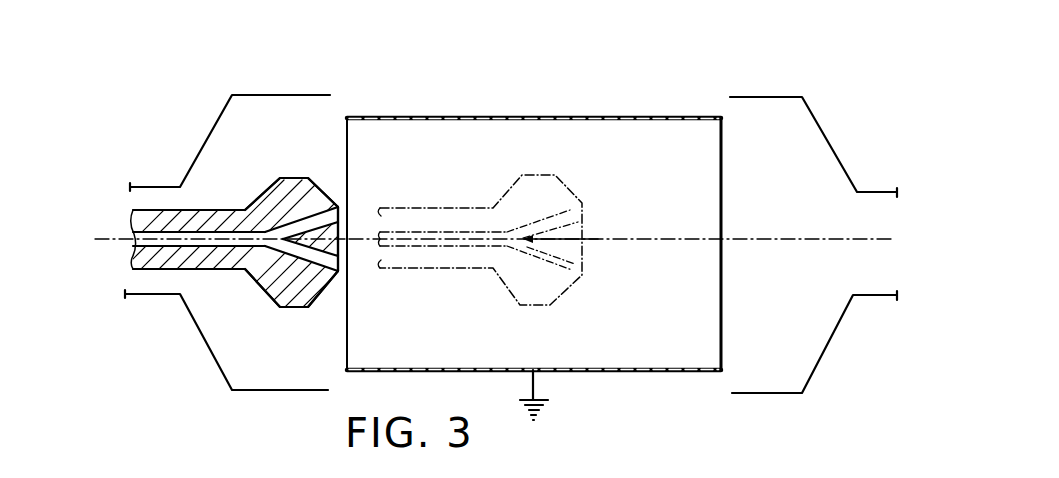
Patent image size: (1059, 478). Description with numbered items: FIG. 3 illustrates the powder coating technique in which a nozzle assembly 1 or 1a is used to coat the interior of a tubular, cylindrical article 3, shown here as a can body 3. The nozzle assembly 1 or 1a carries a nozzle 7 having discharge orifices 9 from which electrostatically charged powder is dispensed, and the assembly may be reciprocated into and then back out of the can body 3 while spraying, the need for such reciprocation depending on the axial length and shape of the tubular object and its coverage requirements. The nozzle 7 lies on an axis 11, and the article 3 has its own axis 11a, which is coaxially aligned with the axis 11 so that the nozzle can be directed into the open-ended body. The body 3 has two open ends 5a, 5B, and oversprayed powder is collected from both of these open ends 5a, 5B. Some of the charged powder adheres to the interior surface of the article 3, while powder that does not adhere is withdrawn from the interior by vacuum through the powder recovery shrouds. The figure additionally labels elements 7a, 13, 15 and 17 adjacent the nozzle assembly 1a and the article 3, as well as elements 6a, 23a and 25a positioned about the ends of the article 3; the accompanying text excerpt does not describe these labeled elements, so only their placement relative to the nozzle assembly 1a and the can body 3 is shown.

The nozzle assembly 1 is at (356, 263).
The nozzle assembly 1a is at (198, 212).
The tubular cylindrical article 3 is at (521, 117).
The open end 5a is at (342, 141).
The open end 5B is at (724, 359).
The conductor 6a is at (846, 73).
The nozzle 7 is at (555, 177).
The hexagonal coupling nut 7a is at (322, 203).
The discharge orifices 9 is at (343, 208).
The axis 11 is at (104, 236).
The axis 11a is at (656, 244).
The central bore 13 is at (167, 244).
The ground connection 15 is at (550, 414).
The conductor end 17 is at (874, 190).
The conductor 23a is at (263, 66).
The conductor 25a is at (262, 393).